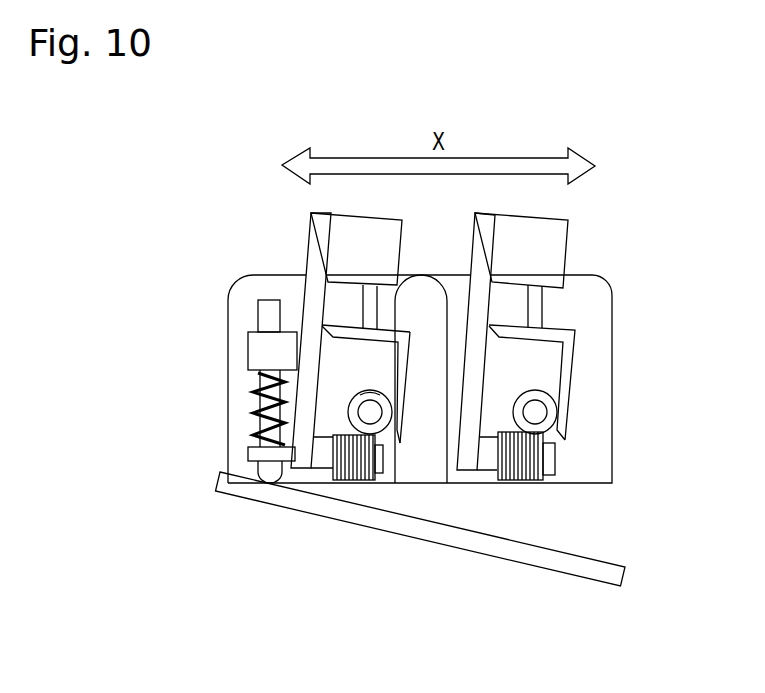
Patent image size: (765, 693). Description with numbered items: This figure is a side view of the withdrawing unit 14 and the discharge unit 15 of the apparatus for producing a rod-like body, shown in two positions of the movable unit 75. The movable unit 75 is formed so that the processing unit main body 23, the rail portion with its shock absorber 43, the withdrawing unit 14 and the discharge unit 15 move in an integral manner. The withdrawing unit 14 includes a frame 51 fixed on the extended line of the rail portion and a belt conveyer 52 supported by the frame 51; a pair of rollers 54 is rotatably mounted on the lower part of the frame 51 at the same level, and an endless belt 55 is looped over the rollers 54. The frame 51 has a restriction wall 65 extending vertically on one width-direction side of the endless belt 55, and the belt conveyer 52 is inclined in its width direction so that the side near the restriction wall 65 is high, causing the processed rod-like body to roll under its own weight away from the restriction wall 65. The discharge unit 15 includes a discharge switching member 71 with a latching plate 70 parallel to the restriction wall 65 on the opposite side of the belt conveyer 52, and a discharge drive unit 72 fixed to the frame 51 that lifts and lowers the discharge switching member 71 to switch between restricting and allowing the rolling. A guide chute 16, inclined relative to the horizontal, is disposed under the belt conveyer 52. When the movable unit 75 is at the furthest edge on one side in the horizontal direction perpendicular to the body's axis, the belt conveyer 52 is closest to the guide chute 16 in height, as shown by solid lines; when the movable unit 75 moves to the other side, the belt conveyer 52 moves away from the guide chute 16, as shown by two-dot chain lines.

The withdrawing unit 14 is at (317, 482).
The discharge unit 15 is at (431, 299).
The guide chute 16 is at (603, 561).
The processing unit main body 23 is at (226, 314).
The shock absorber 43 is at (300, 392).
The frame 51 is at (315, 265).
The belt conveyer 52 is at (343, 432).
The roller 54 is at (386, 459).
The endless belt 55 is at (353, 484).
The restriction wall 65 is at (258, 397).
The latching plate 70 is at (448, 469).
The discharge switching member 71 is at (411, 395).
The discharge drive unit 72 is at (357, 250).
The movable unit 75 is at (431, 347).